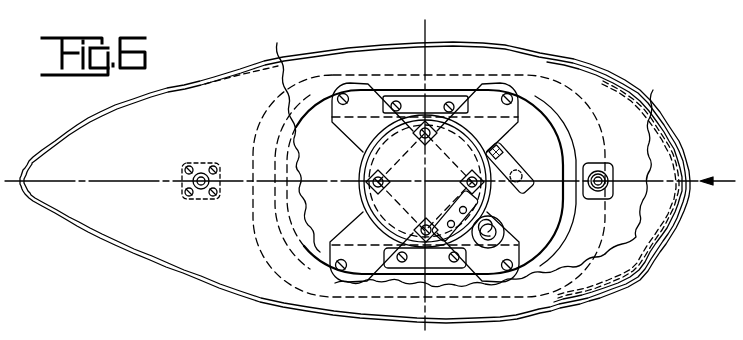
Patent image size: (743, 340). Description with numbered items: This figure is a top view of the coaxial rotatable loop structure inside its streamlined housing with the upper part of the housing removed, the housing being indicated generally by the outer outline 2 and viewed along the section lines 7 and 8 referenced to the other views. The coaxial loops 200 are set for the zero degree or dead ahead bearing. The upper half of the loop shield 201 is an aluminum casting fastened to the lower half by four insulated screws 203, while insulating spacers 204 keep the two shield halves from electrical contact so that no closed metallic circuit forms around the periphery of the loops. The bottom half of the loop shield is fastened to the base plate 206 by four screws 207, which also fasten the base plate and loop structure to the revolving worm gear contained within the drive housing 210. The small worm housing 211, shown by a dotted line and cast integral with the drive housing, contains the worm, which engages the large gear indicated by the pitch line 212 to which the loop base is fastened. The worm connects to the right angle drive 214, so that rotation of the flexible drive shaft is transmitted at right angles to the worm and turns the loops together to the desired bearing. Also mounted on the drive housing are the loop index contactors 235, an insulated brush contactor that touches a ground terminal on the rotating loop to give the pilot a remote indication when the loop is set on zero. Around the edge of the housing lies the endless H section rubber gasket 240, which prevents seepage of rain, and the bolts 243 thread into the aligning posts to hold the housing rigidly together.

The boat 2 is at (739, 276).
The section line 7- 7 is at (282, 186).
The section line 8- 8 is at (428, 35).
The coaxial loops 200 is at (357, 146).
The upper half of the loop shield 201 is at (356, 212).
The insulated screws 203 is at (336, 88).
The insulating spacers 204 is at (522, 97).
The base plate 206 is at (420, 260).
The screws 207 is at (433, 246).
The housing 210 is at (390, 256).
The worm housing 211 is at (490, 90).
The large gear 212 is at (408, 117).
The 90° angle drive 214 is at (569, 145).
The loop index contactors 235 is at (500, 220).
The rubber gasket 240 is at (393, 49).
The bolts 243 is at (201, 172).